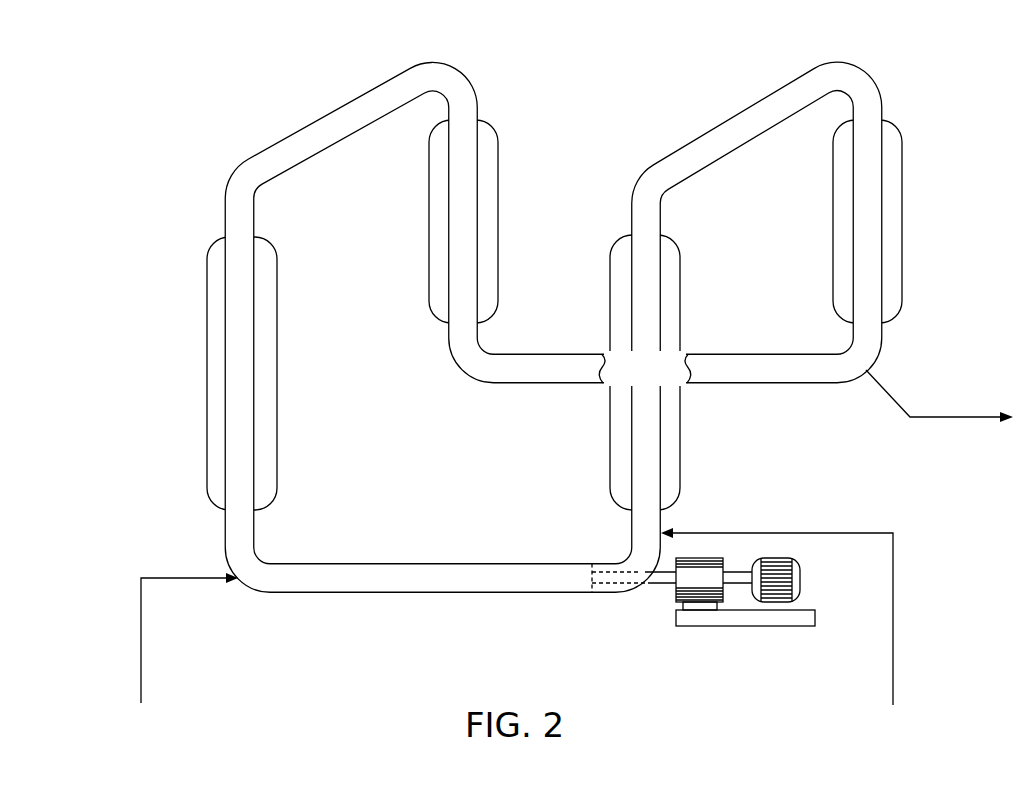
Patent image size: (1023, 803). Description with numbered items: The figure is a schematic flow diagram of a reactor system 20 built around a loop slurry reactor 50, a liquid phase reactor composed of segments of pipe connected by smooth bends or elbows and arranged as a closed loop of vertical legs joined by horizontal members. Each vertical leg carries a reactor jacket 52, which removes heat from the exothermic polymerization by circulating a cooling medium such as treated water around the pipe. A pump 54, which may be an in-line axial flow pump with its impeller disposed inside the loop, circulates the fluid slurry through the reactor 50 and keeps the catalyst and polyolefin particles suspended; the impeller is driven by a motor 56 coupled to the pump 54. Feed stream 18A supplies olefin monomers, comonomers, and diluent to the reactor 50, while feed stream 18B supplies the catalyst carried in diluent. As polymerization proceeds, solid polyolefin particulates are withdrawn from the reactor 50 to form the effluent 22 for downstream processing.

The reactor system 20 is at (630, 36).
The loop slurry reactor 50 is at (761, 100).
The reactor jacket 52 is at (277, 318).
The effluent 22 is at (887, 394).
The pump 54 is at (674, 595).
The motor 56 is at (800, 581).
The feed stream 18A is at (893, 626).
The feed stream 18B is at (141, 669).